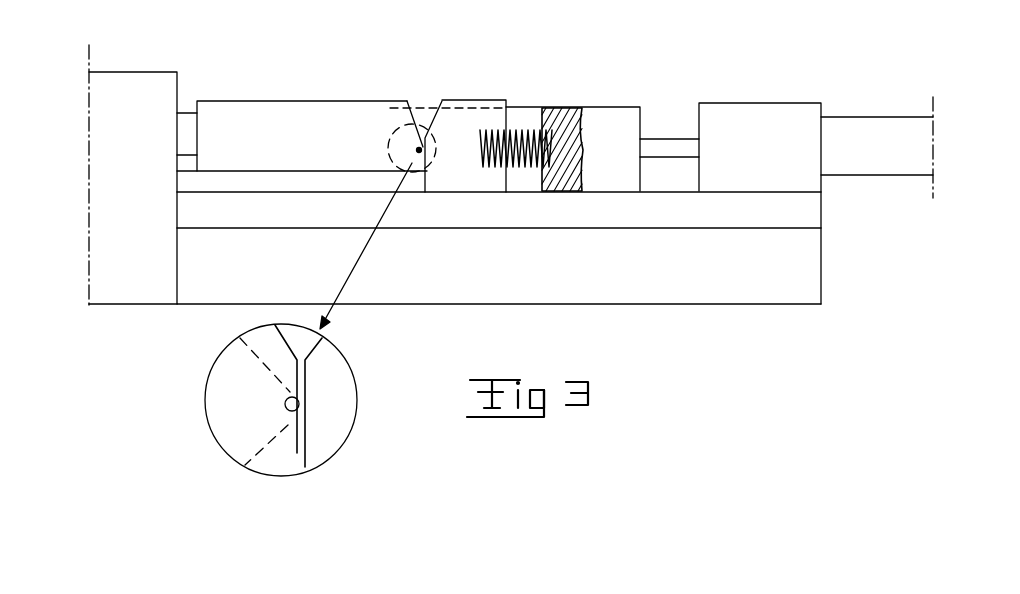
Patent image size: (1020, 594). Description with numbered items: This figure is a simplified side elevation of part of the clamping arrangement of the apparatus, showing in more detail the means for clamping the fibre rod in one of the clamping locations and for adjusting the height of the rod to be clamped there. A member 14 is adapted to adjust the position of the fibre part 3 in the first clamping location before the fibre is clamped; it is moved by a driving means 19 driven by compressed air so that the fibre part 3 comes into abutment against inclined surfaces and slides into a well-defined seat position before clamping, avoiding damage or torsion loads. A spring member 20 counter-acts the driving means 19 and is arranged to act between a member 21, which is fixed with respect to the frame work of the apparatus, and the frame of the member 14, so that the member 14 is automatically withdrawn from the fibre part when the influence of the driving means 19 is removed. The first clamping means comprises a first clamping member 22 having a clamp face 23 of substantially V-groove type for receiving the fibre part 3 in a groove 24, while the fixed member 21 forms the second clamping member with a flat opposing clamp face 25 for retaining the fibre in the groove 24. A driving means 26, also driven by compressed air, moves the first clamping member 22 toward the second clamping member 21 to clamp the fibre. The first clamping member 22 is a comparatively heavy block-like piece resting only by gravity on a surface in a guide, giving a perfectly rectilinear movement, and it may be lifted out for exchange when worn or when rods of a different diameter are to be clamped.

The driving means 26 is at (107, 133).
The first clamping member 22 is at (282, 110).
The fixed member 21 is at (467, 100).
The member 14 is at (620, 112).
The spring member 20 is at (527, 163).
The driving means 19 is at (853, 173).
The fibre part 3 is at (300, 404).
The groove 24 is at (287, 405).
The clamp face 23 is at (293, 455).
The flat opposing clamp face 25 is at (300, 467).